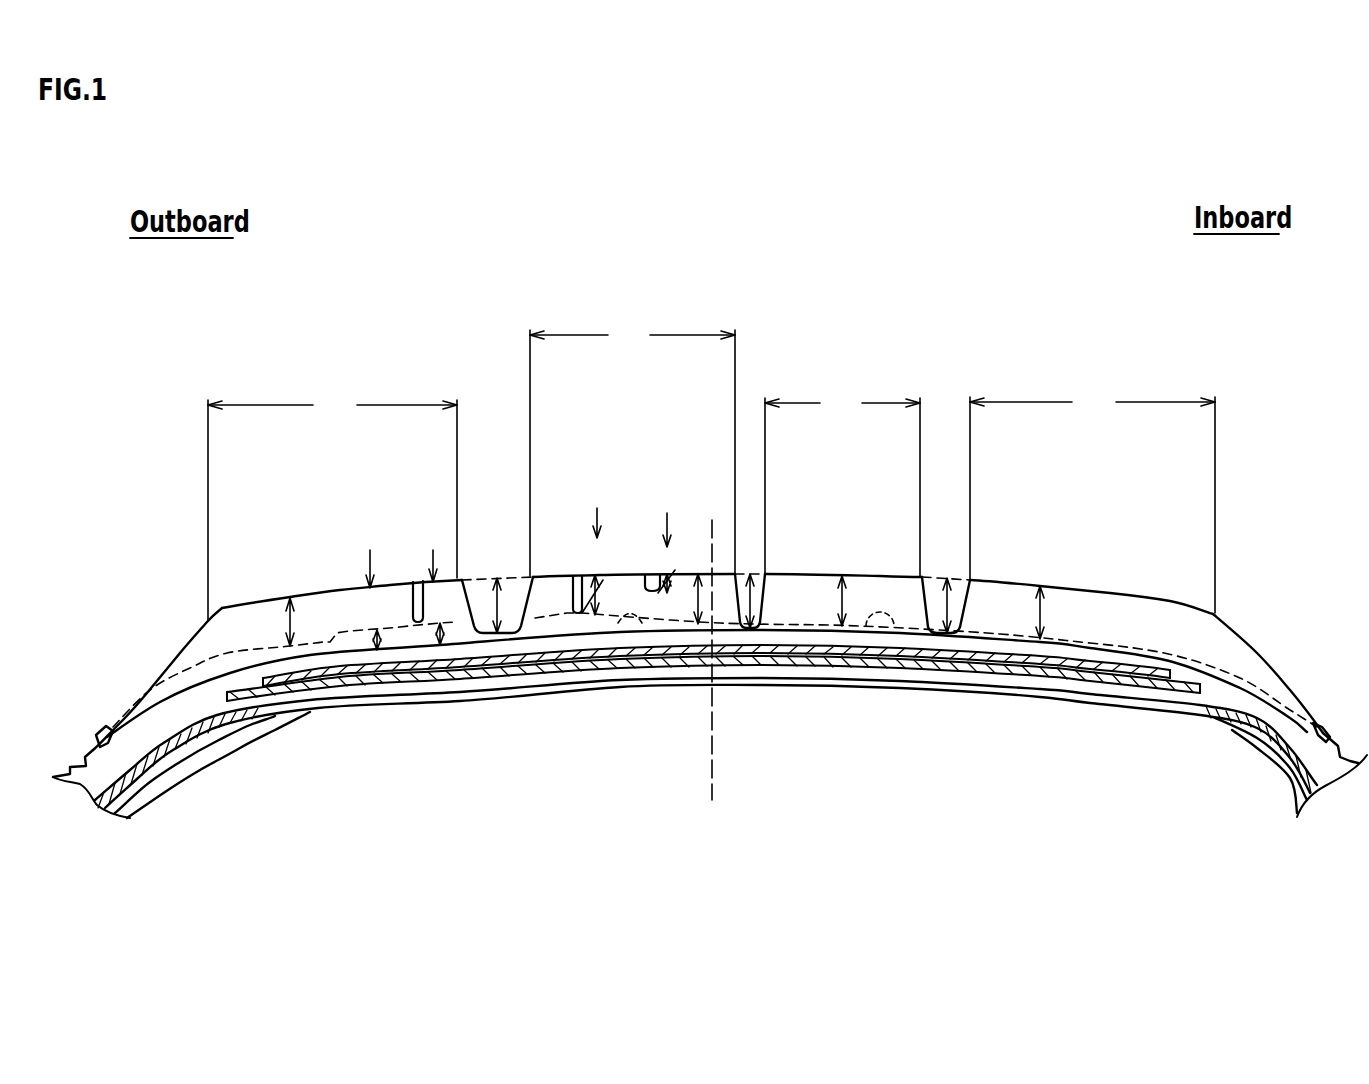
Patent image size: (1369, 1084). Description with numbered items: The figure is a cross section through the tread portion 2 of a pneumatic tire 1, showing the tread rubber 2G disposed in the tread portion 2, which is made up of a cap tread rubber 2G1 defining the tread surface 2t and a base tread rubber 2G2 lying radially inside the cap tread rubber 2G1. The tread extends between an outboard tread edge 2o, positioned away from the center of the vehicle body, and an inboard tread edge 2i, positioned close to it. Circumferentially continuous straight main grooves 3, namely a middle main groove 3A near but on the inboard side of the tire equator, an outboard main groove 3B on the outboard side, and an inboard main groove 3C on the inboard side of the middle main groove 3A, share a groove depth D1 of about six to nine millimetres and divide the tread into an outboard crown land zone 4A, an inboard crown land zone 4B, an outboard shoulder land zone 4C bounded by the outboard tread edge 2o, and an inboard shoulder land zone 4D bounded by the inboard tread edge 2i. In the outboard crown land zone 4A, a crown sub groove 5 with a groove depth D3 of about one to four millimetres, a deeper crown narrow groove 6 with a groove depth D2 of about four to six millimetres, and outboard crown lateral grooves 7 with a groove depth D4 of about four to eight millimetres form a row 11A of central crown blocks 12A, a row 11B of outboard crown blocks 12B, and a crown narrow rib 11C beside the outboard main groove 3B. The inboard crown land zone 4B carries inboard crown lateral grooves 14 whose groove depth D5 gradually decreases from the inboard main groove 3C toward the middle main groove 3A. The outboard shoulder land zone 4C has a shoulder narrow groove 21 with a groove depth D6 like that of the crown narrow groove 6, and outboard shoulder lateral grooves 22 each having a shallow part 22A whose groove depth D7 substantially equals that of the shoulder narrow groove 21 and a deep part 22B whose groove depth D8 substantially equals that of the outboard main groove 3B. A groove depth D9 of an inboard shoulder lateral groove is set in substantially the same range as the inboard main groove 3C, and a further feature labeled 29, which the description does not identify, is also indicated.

The pneumatic tire 1 is at (1221, 364).
The tread portion 2 is at (878, 564).
The outboard tread edge 2o is at (207, 622).
The inboard tread edge 2i is at (1215, 613).
The tread surface 2t is at (1012, 582).
The tread rubber 2G is at (1129, 555).
The cap tread rubber 2G1 is at (1093, 618).
The base tread rubber 2G2 is at (1177, 666).
The main grooves 3 is at (710, 448).
The middle main groove 3A is at (752, 568).
The outboard main groove 3B is at (486, 570).
The inboard main groove 3C is at (953, 566).
The outboard crown land zone 4A is at (632, 446).
The inboard crown land zone 4B is at (842, 480).
The outboard shoulder land zone 4C is at (332, 503).
The inboard shoulder land zone 4D is at (1092, 498).
The crown sub groove 5 is at (652, 560).
The crown narrow groove 6 is at (575, 563).
The outboard crown lateral grooves 7 is at (642, 623).
The row of central crown blocks 11A is at (663, 440).
The central crown blocks 12A is at (692, 523).
The row of outboard crown blocks 11B is at (610, 464).
The outboard crown blocks 12B is at (620, 530).
The crown narrow rib 11C is at (552, 563).
The inboard crown lateral grooves 14 is at (882, 628).
The shoulder narrow groove 21 is at (418, 578).
The outboard shoulder lateral grooves 22 is at (301, 537).
The shallow part 22A is at (360, 620).
The deep part 22B is at (258, 642).
The shoulder element 29 is at (330, 637).
The groove depth of the main grooves D1 is at (500, 612).
The groove depth of the crown narrow groove D2 is at (609, 561).
The groove depth of the crown sub groove D3 is at (683, 553).
The groove depth of the outboard crown lateral groove D4 is at (697, 610).
The groove depth of the inboard crown lateral groove D5 is at (840, 600).
The groove depth of the shoulder narrow groove D6 is at (442, 648).
The groove depth of the shallow part D7 is at (376, 652).
The groove depth of the deep part D8 is at (289, 630).
The groove depth of the inboard shoulder lateral groove D9 is at (1043, 615).